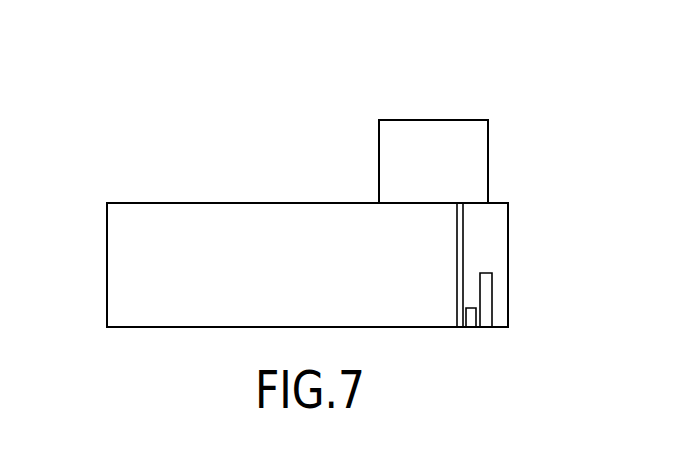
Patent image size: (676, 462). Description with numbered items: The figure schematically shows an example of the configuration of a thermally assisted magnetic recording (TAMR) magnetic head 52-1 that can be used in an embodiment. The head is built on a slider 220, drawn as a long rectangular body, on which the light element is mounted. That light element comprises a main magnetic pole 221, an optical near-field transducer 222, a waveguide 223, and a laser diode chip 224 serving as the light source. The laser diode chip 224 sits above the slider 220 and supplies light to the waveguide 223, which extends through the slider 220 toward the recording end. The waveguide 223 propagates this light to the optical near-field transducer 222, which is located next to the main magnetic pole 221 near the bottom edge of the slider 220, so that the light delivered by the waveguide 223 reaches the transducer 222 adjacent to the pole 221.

The pressing member 52-1 is at (297, 103).
The slider 220 is at (108, 266).
The main magnetic pole 221 is at (484, 310).
The optical near-field transducer 222 is at (474, 303).
The waveguide 223 is at (463, 248).
The laser diode chip 224 is at (490, 160).